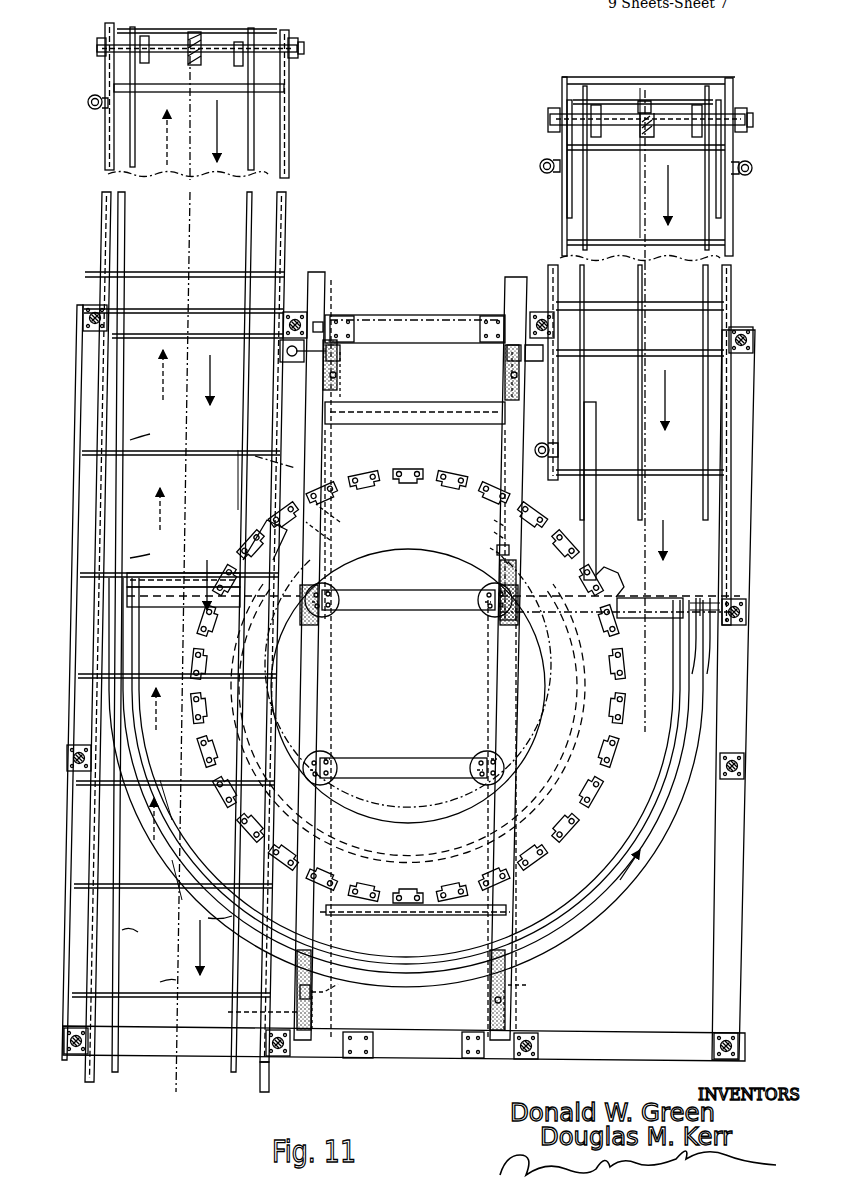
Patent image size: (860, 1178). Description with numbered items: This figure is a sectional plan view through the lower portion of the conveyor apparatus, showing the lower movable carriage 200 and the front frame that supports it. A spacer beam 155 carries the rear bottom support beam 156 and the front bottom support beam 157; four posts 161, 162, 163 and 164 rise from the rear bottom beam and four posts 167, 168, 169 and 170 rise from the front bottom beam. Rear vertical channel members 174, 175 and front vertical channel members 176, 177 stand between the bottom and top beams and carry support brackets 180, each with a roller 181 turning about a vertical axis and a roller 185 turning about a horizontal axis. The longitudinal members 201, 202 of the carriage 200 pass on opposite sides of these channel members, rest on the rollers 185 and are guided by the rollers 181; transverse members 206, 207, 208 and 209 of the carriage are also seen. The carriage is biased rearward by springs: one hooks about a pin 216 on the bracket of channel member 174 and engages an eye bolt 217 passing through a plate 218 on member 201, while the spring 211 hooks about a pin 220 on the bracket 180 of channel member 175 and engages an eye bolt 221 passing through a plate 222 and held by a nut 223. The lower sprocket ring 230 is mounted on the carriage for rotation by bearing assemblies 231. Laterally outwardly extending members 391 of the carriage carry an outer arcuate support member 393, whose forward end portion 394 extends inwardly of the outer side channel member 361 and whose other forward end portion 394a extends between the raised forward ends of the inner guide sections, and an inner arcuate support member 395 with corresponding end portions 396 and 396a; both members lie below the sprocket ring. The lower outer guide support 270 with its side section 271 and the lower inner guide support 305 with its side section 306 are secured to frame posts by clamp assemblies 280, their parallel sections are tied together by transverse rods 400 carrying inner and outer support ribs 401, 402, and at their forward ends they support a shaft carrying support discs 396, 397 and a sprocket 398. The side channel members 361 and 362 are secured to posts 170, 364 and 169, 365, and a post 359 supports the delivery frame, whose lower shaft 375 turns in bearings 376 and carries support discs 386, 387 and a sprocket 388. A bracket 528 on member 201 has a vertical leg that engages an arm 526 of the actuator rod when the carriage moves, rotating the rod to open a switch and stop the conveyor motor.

The spacer beam 155 is at (747, 484).
The rear bottom support beam 156 is at (442, 1034).
The front bottom support beam 157 is at (388, 316).
The post 161 is at (66, 1032).
The post 162 is at (280, 1056).
The post 163 is at (532, 1040).
The post 164 is at (739, 1050).
The post 167 is at (94, 310).
The post 168 is at (296, 312).
The vertical post 169 is at (542, 314).
The vertical post 170 is at (746, 332).
The rear vertical channel member 174 is at (346, 1058).
The rear vertical channel member 175 is at (484, 1060).
The front vertical channel member 176 is at (346, 314).
The front vertical channel member 177 is at (490, 318).
The support bracket 180 is at (94, 108).
The roller 181 is at (341, 372).
The roller 185 is at (249, 1009).
The carriage 200 is at (384, 404).
The longitudinal member 201 is at (324, 439).
The longitudinal member 202 is at (508, 435).
The cross member 206 is at (436, 612).
The cross member 207 is at (430, 758).
The upper cross member 208 is at (432, 414).
The lower cross member 209 is at (468, 916).
The spring 211 is at (498, 654).
The pin 216 is at (344, 993).
The eye bolt 217 is at (340, 530).
The plate 218 is at (330, 516).
The pin 220 is at (539, 982).
The eye bolt 221 is at (496, 542).
The plate 222 is at (479, 528).
The nut 223 is at (478, 514).
The sprocket ring 230 is at (418, 546).
The bearing assembly 231 is at (332, 616).
The lower outer guide support 270 is at (106, 254).
The side section 271 is at (102, 196).
The clamp assembly 280 is at (749, 600).
The lower inner guide support 305 is at (282, 252).
The side section 306 is at (288, 154).
The post 359 is at (540, 169).
The outer side channel member 361 is at (732, 442).
The side channel member 362 is at (558, 400).
The vertical post 364 is at (751, 612).
The vertical post 365 is at (532, 450).
The lower shaft 375 is at (752, 117).
The bearing 376 is at (548, 108).
The support disc 386 is at (606, 90).
The support disc 387 is at (694, 100).
The sprocket 388 is at (660, 134).
The laterally outwardly extending member 391 is at (292, 482).
The arcuate support member 393 is at (607, 885).
The forward end portion 394 is at (680, 660).
The forward end portion 394a is at (160, 574).
The inner arcuate support member 395 is at (302, 53).
The support disc 396 is at (298, 48).
The bar 396a is at (236, 454).
The support disc 397 is at (203, 65).
The sprocket 398 is at (198, 64).
The transverse rod 400 is at (157, 701).
The inner support rib 401 is at (204, 917).
The outer support rib 402 is at (145, 929).
The arm of actuator rod 526 is at (292, 356).
The bracket 528 is at (318, 320).